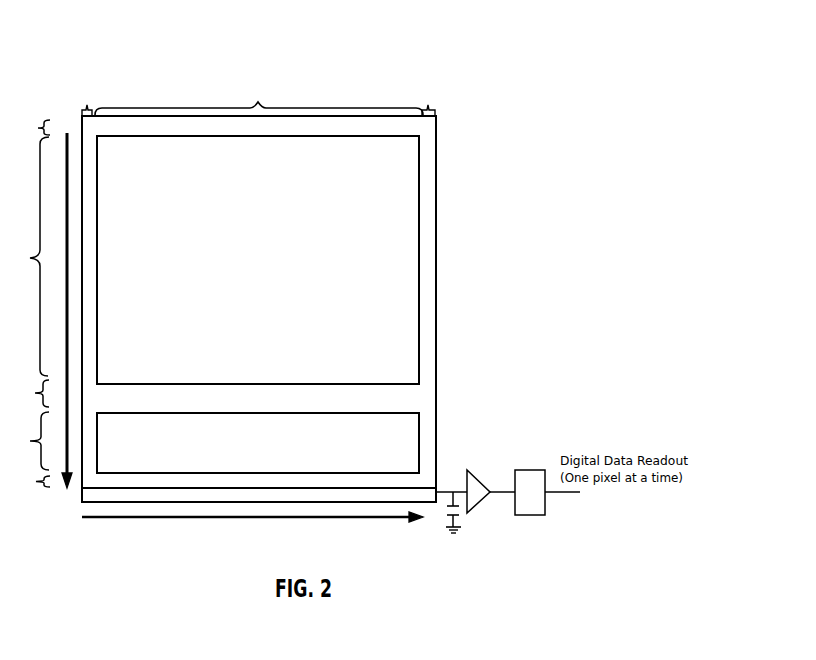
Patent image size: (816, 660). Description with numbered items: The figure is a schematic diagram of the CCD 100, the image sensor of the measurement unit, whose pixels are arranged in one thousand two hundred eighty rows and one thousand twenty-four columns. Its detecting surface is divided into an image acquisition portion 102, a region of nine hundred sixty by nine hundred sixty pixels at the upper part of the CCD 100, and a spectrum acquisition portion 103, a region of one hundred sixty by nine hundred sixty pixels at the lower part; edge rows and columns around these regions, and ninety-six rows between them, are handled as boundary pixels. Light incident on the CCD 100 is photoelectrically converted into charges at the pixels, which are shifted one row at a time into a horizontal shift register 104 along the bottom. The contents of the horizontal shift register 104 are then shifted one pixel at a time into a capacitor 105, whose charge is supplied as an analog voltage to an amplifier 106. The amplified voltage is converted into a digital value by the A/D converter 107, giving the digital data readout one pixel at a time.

The CCD 100 is at (233, 287).
The image acquisition portion 102 is at (258, 260).
The spectrum acquisition portion 103 is at (258, 443).
The horizontal shift register 104 is at (259, 495).
The capacitor 105 is at (451, 526).
The amplifier 106 is at (485, 472).
The analog-to-digital (A/D) converter 107 is at (544, 473).